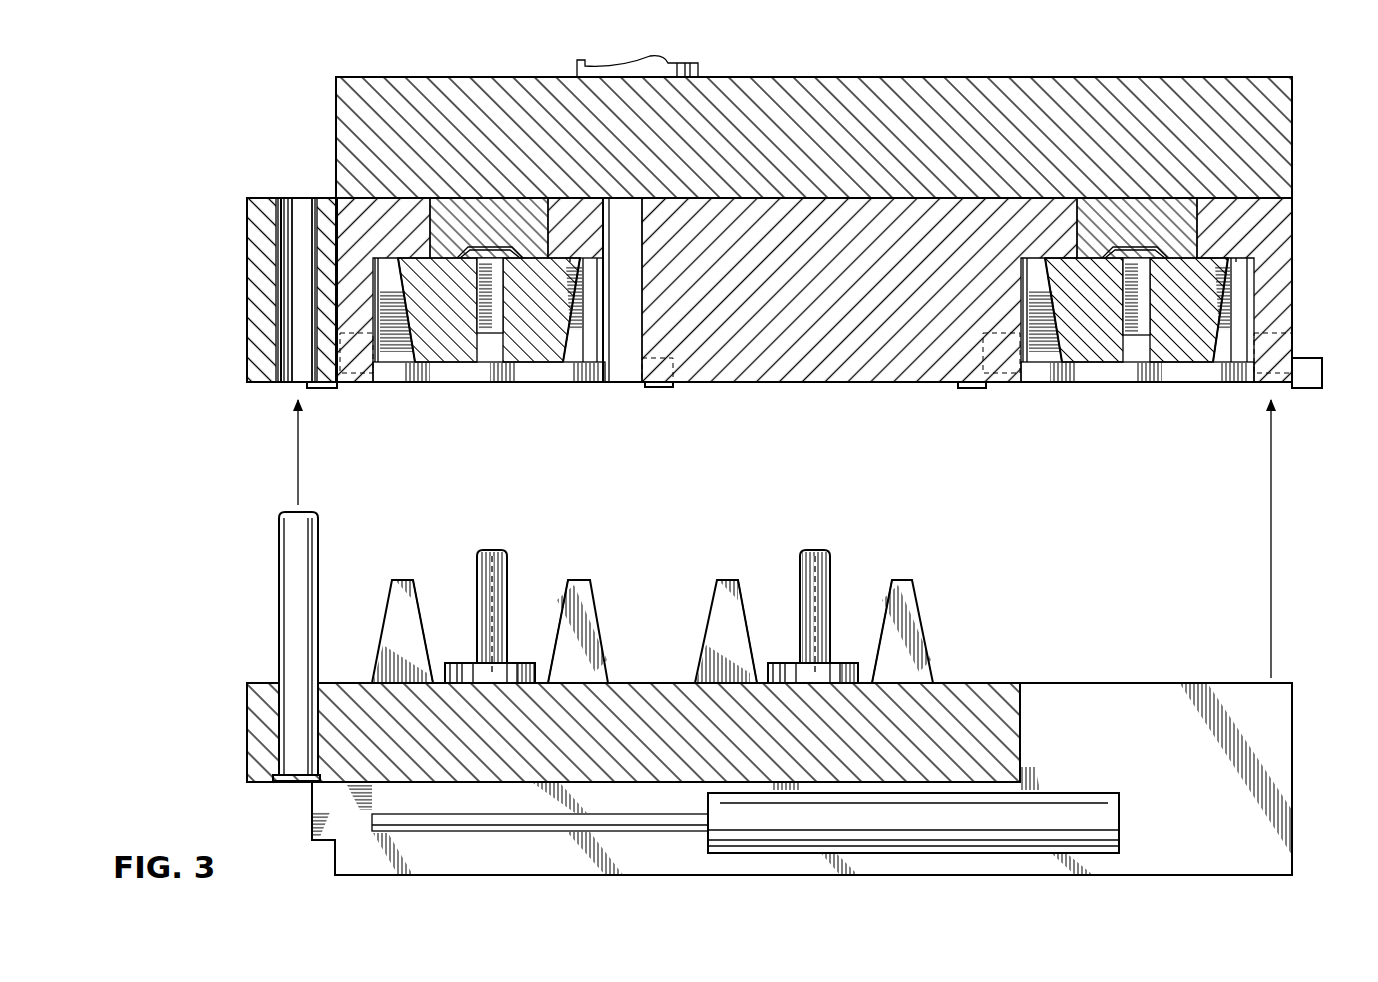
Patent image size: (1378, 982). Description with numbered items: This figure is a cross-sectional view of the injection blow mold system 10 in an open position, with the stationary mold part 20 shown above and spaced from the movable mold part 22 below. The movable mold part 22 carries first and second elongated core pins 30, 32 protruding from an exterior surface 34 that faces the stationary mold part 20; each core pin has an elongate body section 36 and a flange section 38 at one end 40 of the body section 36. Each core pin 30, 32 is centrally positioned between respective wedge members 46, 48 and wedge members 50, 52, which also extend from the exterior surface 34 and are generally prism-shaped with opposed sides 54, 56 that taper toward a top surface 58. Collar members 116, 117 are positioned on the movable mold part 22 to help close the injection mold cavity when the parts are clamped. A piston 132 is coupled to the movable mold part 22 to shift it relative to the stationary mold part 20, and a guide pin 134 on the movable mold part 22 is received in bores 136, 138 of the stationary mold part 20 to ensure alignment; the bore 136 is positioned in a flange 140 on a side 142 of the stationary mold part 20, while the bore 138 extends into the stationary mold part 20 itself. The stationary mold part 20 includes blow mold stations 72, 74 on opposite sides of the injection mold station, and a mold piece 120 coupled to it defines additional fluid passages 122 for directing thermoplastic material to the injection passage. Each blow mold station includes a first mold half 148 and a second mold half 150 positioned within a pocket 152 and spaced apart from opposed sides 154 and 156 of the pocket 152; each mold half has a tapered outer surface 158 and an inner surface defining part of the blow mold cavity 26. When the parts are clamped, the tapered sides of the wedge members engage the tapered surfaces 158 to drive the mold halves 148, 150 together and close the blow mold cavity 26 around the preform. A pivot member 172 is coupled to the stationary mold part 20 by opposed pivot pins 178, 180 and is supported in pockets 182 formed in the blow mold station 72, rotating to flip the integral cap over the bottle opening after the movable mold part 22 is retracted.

The injection blow mold system 10 is at (272, 96).
The stationary mold part 20 is at (1296, 232).
The movable mold part 22 is at (1296, 722).
The blow mold cavity 26 is at (492, 372).
The first core pin 30 is at (828, 552).
The second core pin 32 is at (505, 552).
The exterior surface 34 is at (1000, 683).
The body section 36 is at (507, 628).
The flange section 38 is at (472, 674).
The end 40 is at (512, 665).
The wedge member 46 is at (912, 579).
The wedge member 48 is at (717, 579).
The wedge member 50 is at (591, 579).
The wedge member 52 is at (392, 579).
The side 54 is at (416, 588).
The side 56 is at (385, 620).
The top surface 58 is at (398, 579).
The blow mold station 72 is at (1141, 186).
The blow mold station 74 is at (486, 191).
The collar member 116 is at (855, 676).
The collar member 117 is at (530, 676).
The mold piece 120 is at (1292, 108).
The fluid passages 122 is at (700, 69).
The piston 132 is at (1122, 811).
The guide pin 134 is at (279, 546).
The bore 136 is at (283, 218).
The bore 138 is at (630, 368).
The flange 140 is at (247, 225).
The side 142 is at (337, 285).
The first mold half 148 is at (540, 365).
The second mold half 150 is at (447, 365).
The pocket 152 is at (570, 320).
The side of pocket 154 is at (598, 380).
The side of pocket 156 is at (382, 362).
The tapered outer surface 158 is at (405, 332).
The pivot member 172 is at (575, 345).
The pivot pin 178 is at (660, 388).
The pivot pin 180 is at (320, 388).
The pocket 182 is at (490, 342).